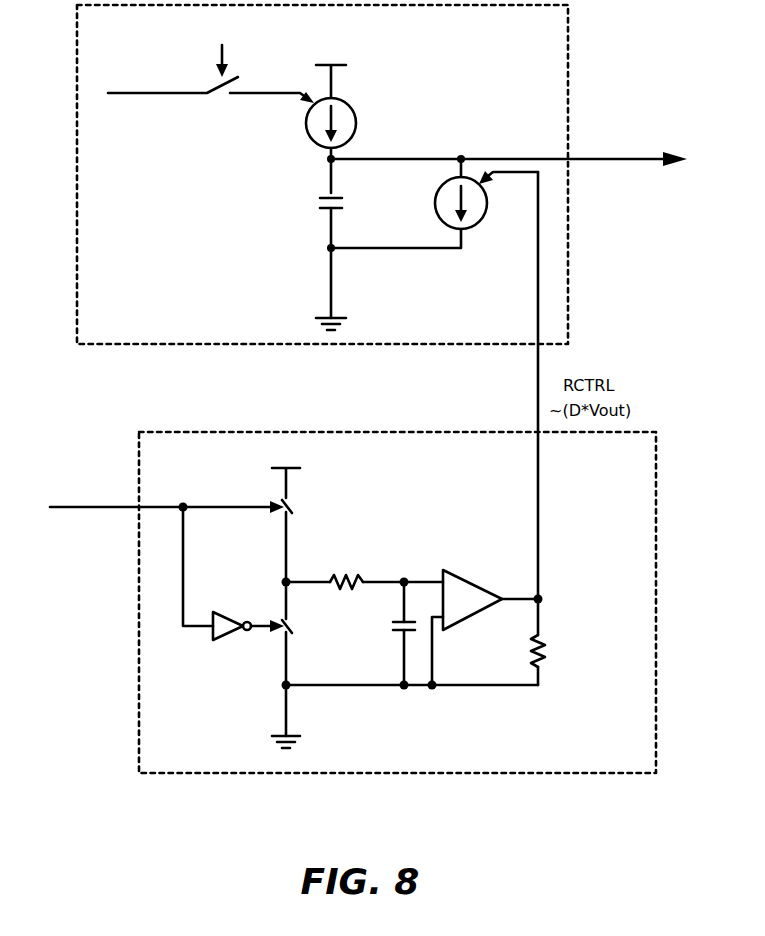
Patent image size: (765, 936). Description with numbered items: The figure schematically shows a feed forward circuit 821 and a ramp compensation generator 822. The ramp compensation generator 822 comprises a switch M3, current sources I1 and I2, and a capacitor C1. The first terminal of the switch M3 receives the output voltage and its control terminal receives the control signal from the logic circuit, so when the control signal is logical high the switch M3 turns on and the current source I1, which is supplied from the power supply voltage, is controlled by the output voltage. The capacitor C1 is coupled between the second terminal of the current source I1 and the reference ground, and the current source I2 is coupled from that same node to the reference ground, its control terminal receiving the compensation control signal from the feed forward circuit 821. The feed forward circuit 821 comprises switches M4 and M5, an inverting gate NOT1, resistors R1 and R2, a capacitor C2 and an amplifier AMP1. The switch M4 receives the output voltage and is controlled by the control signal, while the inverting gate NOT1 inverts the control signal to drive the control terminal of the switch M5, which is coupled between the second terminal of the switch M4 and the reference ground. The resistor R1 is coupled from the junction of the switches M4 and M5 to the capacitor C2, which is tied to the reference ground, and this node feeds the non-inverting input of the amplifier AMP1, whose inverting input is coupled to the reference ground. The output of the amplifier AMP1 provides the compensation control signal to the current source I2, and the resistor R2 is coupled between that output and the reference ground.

The feed forward circuit 821 is at (198, 773).
The ramp compensation generator 822 is at (108, 345).
The switch M3 is at (211, 105).
The current source I1 is at (343, 123).
The capacitor C1 is at (346, 203).
The current source I2 is at (450, 203).
The switch M4 is at (302, 507).
The switch M5 is at (302, 627).
The inverting gate NOT1 is at (226, 639).
The resistor R1 is at (346, 571).
The capacitor C2 is at (386, 632).
The amplifier AMP1 is at (472, 587).
The resistor R2 is at (552, 651).